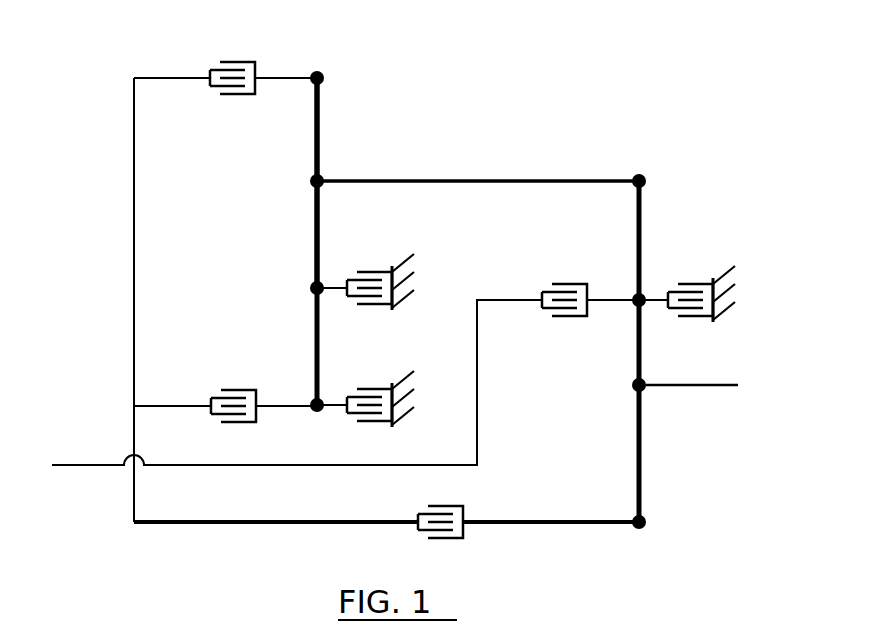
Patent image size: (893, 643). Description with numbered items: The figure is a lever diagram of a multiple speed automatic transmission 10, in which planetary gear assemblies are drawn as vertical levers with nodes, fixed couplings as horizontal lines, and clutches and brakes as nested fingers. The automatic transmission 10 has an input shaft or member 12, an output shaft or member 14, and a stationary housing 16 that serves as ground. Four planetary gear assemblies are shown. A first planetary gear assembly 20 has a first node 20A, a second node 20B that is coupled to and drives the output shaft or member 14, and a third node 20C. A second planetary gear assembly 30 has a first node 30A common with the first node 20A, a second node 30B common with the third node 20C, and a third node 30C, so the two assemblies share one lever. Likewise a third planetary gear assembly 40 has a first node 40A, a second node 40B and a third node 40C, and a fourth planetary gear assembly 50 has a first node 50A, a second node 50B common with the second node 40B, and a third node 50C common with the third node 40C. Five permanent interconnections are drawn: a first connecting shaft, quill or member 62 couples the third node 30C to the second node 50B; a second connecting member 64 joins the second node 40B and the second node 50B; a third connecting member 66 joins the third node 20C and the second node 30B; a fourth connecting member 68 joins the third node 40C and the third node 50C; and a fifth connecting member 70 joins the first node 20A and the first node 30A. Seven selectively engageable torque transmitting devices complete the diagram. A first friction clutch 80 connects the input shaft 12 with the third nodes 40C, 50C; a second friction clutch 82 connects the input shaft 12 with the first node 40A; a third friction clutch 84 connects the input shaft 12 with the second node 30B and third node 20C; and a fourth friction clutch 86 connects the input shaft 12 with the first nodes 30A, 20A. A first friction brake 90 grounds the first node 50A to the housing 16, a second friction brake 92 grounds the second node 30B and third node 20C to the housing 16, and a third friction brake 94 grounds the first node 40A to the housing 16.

The multiple speed automatic transmission 10 is at (694, 117).
The input shaft or member 12 is at (78, 470).
The output shaft or member 14 is at (708, 388).
The stationary housing 16 is at (402, 302).
The first planetary gear assembly 20 is at (676, 458).
The first node 20A is at (645, 522).
The second node 20B is at (637, 386).
The third node 20C is at (637, 300).
The second planetary gear assembly 30 is at (678, 206).
The first node 30A is at (637, 527).
The second node 30B is at (637, 302).
The third node 30C is at (639, 180).
The third planetary gear assembly 40 is at (272, 301).
The first node 40A is at (316, 410).
The second node 40B is at (315, 183).
The third node 40C is at (317, 76).
The fourth planetary gear assembly 50 is at (394, 127).
The first node 50A is at (315, 288).
The second node 50B is at (320, 180).
The third node 50C is at (322, 79).
The first connecting shaft, quill or member 62 is at (520, 180).
The second connecting shaft, quill or member 64 is at (315, 181).
The third connecting shaft, quill or member 66 is at (642, 298).
The fourth connecting shaft, quill or member 68 is at (320, 75).
The fifth connecting shaft, quill or member 70 is at (640, 528).
The first friction clutch 80 is at (232, 60).
The second friction clutch 82 is at (237, 388).
The third friction clutch 84 is at (567, 283).
The fourth friction clutch 86 is at (442, 504).
The first friction brake 90 is at (372, 268).
The second friction brake 92 is at (692, 283).
The third friction brake 94 is at (372, 387).